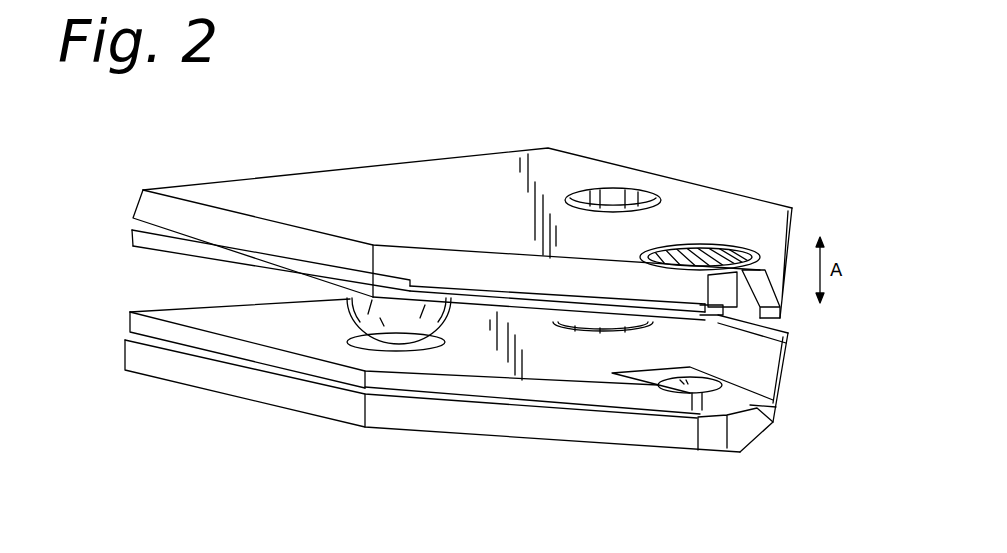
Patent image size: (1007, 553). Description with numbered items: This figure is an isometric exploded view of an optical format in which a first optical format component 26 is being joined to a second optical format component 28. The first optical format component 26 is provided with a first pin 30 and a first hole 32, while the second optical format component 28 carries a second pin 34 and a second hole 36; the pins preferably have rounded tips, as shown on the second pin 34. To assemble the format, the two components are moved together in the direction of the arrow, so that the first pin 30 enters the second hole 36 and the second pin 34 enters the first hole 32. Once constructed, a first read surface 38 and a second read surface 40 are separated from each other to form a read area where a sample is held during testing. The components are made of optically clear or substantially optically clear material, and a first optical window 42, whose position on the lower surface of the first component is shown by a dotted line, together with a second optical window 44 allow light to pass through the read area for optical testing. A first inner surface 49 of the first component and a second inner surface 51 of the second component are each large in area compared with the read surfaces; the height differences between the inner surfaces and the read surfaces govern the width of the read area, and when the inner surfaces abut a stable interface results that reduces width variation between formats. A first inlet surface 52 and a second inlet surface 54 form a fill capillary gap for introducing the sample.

The first optical format component 26 is at (190, 365).
The second optical format component 28 is at (152, 205).
The first pin 30 is at (588, 325).
The first hole 32 is at (413, 347).
The second pin 34 is at (147, 340).
The second hole 36 is at (618, 202).
The first read surface 38 is at (683, 385).
The second read surface 40 is at (710, 311).
The first optical window 42 is at (683, 438).
The second optical window 44 is at (717, 252).
The first inner surface 49 is at (287, 335).
The second inner surface 51 is at (163, 257).
The first inlet surface 52 is at (752, 405).
The second inlet surface 54 is at (718, 314).